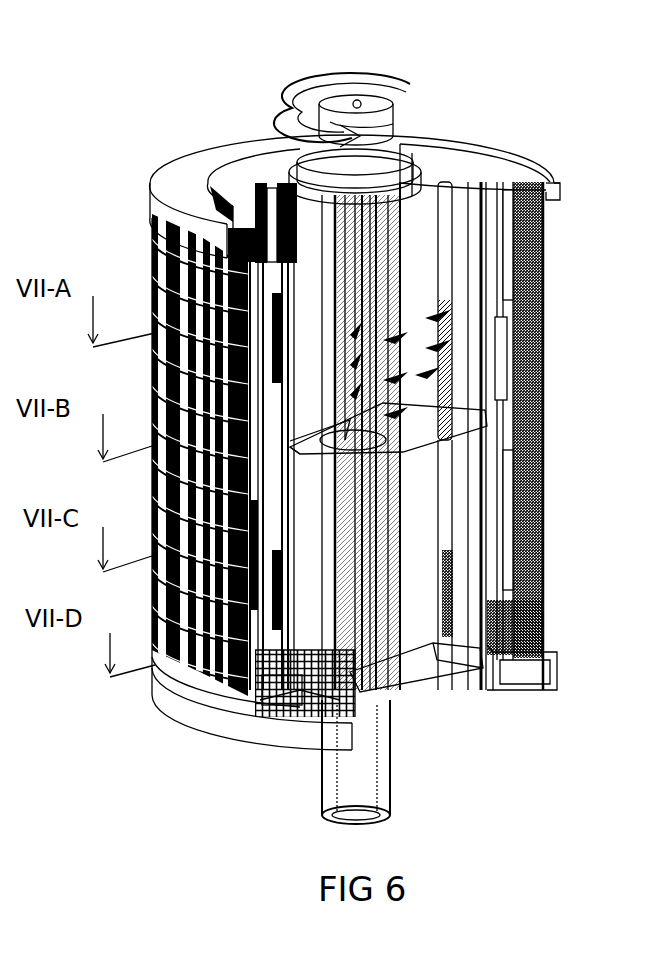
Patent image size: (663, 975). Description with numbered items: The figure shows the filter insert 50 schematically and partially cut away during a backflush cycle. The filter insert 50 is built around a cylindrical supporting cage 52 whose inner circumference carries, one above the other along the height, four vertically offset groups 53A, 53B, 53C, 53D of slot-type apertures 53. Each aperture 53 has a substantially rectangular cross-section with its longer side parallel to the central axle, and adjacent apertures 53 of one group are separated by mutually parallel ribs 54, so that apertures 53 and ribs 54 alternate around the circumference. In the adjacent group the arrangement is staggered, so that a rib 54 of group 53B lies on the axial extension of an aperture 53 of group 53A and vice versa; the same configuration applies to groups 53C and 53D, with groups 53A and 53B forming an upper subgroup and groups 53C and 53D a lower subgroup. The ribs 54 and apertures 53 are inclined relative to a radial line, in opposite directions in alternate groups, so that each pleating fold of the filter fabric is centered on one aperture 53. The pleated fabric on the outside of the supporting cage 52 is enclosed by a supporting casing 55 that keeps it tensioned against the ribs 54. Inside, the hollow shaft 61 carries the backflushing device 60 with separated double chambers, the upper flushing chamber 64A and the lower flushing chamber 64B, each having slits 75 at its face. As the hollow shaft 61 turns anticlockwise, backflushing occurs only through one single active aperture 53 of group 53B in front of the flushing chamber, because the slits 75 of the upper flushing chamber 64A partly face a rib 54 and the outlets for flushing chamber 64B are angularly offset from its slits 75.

The filter insert 50 is at (4, 126).
The supporting cage 52 is at (297, 722).
The slot-type apertures 53 is at (252, 190).
The first group of apertures 53A is at (563, 199).
The second group of apertures 53B is at (551, 378).
The third group of apertures 53C is at (549, 547).
The fourth group of apertures 53D is at (563, 690).
The ribs 54 is at (266, 192).
The supporting casing 55 is at (156, 243).
The backflushing device 60 is at (258, 717).
The hollow shaft 61 is at (350, 773).
The upper flushing chamber 64A is at (430, 222).
The lower flushing chamber 64B is at (456, 523).
The slits 75 is at (420, 262).